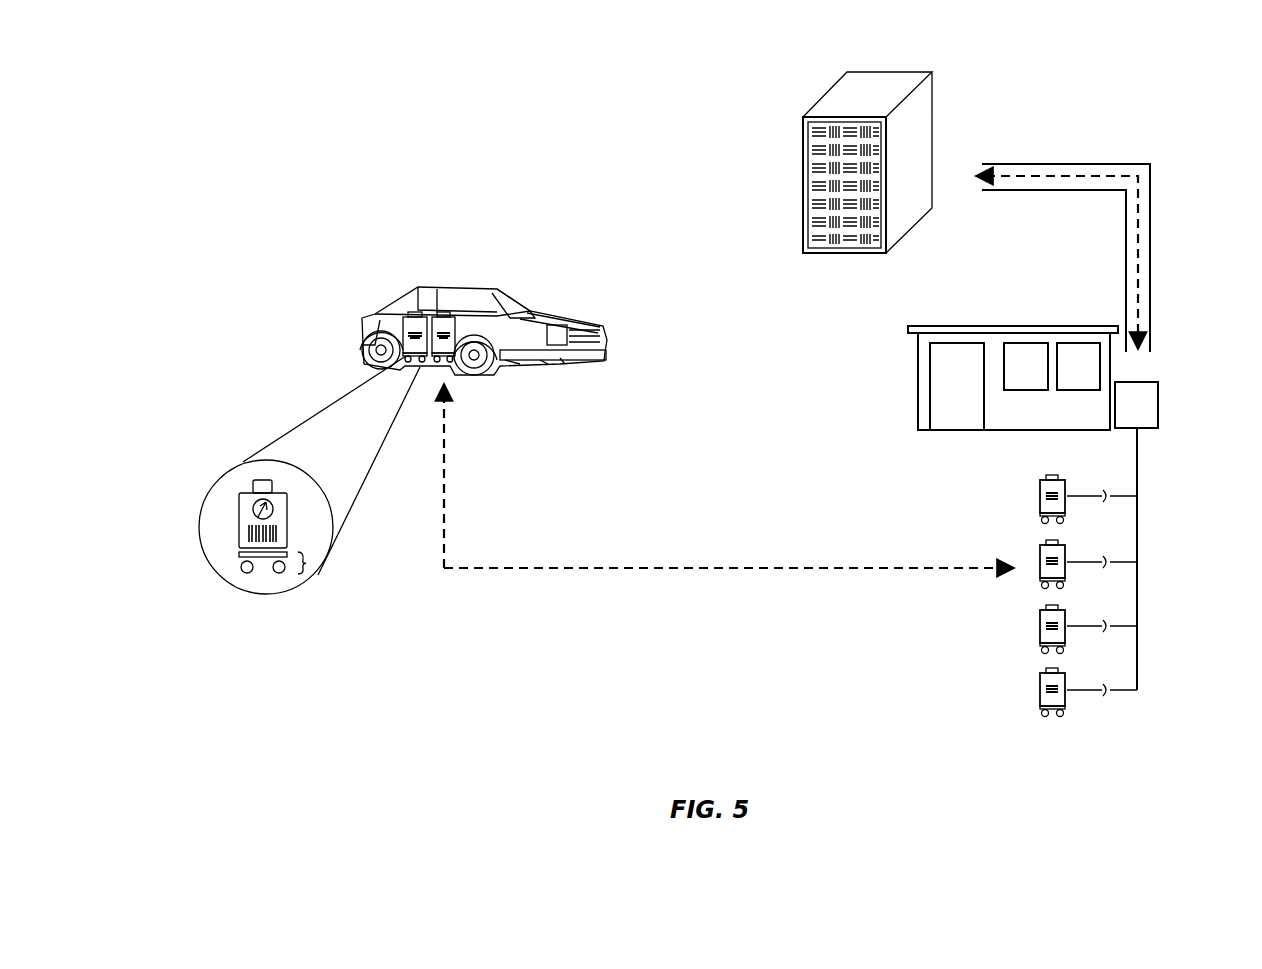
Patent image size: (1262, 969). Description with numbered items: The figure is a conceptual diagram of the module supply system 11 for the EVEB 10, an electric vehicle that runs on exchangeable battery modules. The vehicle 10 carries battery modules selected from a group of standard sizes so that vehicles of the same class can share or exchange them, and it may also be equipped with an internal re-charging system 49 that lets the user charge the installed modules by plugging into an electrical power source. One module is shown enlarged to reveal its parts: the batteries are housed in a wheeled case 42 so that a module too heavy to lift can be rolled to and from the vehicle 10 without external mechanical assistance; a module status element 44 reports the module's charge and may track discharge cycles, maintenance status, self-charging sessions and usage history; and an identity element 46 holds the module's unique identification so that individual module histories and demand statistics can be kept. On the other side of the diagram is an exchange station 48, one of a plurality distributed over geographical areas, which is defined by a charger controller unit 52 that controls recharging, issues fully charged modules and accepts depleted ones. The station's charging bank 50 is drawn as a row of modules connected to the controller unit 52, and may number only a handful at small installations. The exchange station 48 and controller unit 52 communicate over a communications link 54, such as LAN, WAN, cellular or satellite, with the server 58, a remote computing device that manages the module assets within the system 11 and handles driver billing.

The EVEB 10 is at (425, 287).
The module supply system 11 is at (214, 120).
The wheeled case 42 is at (308, 562).
The module status element 44 is at (250, 492).
The identity element 46 is at (238, 520).
The exchange station 48 is at (840, 397).
The internal re-charging system 49 is at (548, 300).
The charging bank 50 is at (962, 638).
The charger controller unit 52 is at (1166, 372).
The communications link 54 is at (1153, 207).
The server 58 is at (847, 100).